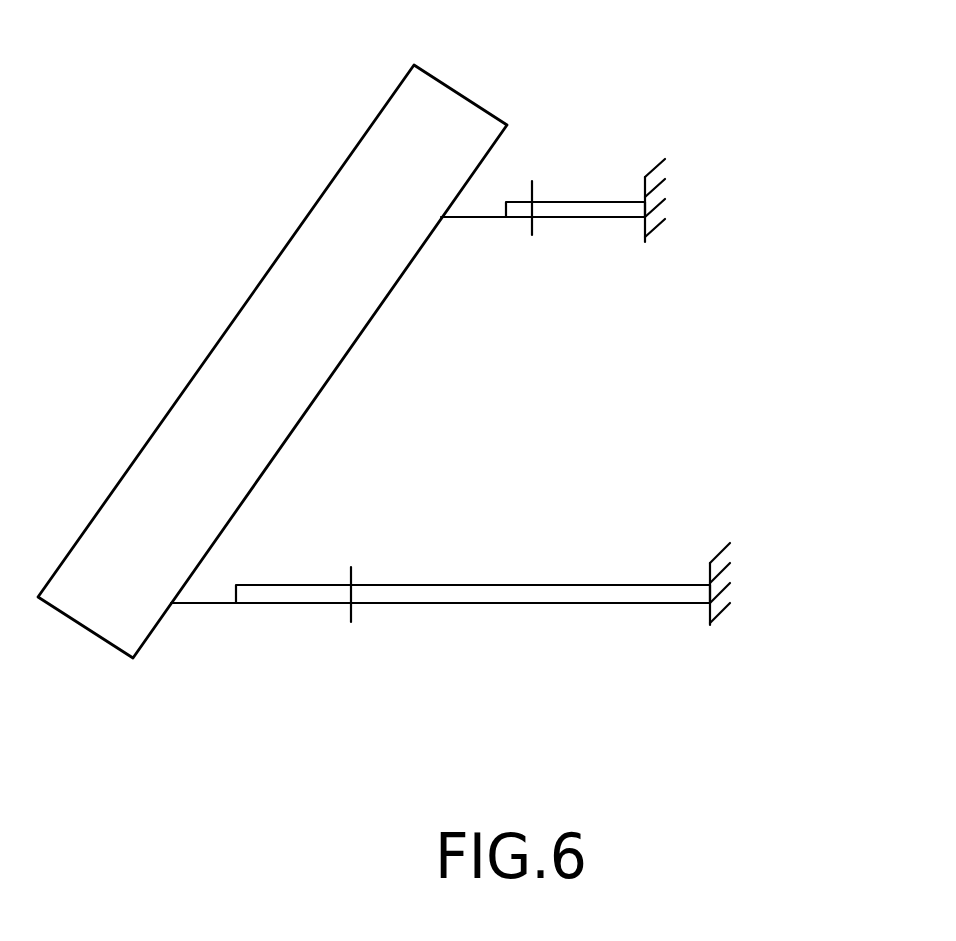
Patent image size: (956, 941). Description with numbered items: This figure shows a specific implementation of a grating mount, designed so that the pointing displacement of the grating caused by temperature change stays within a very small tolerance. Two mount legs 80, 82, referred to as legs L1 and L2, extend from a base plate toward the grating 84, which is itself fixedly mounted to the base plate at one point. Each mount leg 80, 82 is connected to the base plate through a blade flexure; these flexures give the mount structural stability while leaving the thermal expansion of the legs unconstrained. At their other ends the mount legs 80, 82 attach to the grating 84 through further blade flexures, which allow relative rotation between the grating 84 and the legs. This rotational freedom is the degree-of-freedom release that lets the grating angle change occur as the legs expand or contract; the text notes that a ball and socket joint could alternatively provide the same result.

The mount leg 80 is at (593, 605).
The mount leg 82 is at (593, 199).
The grating 84 is at (250, 297).